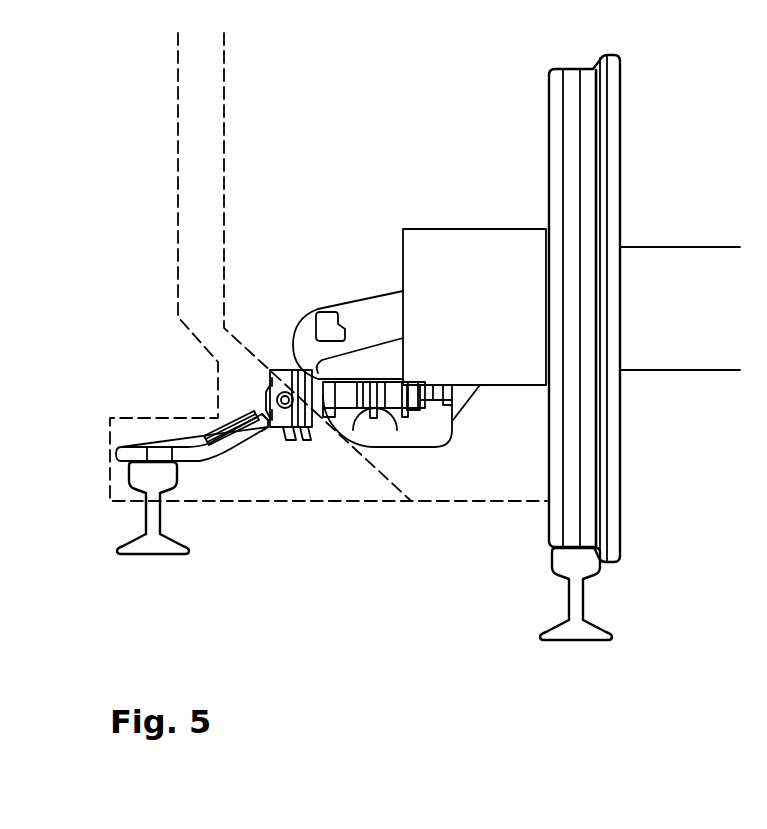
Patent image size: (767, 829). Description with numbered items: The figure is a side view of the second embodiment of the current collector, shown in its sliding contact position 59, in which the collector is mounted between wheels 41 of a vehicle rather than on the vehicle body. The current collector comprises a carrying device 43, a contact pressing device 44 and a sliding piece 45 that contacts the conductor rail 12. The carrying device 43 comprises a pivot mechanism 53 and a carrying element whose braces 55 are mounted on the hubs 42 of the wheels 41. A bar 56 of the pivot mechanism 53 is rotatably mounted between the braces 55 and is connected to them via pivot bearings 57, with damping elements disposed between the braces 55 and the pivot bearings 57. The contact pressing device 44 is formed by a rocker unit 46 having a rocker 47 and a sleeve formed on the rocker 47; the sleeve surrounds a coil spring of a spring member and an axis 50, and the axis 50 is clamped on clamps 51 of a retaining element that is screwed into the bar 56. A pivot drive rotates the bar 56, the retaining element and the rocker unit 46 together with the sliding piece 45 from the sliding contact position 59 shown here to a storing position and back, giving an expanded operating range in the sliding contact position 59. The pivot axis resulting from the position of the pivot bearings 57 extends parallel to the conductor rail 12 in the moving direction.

The conductor rail 12 is at (150, 541).
The wheel 41 is at (610, 107).
The hub 42 is at (485, 253).
The carrying device 43 is at (387, 245).
The contact pressing device 44 is at (244, 315).
The sliding piece 45 is at (132, 455).
The rocker unit 46 is at (242, 398).
The rocker 47 is at (262, 440).
The axis 50 is at (292, 368).
The clamp 51 is at (270, 440).
The pivot mechanism 53 is at (389, 468).
The brace 55 is at (357, 322).
The bar 56 is at (322, 423).
The pivot bearing 57 is at (400, 423).
The sliding contact position 59 is at (203, 295).